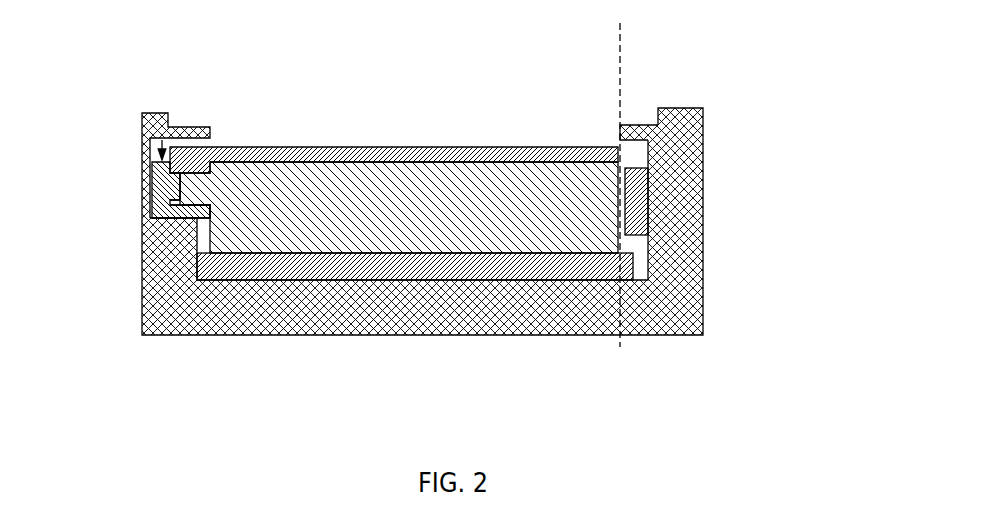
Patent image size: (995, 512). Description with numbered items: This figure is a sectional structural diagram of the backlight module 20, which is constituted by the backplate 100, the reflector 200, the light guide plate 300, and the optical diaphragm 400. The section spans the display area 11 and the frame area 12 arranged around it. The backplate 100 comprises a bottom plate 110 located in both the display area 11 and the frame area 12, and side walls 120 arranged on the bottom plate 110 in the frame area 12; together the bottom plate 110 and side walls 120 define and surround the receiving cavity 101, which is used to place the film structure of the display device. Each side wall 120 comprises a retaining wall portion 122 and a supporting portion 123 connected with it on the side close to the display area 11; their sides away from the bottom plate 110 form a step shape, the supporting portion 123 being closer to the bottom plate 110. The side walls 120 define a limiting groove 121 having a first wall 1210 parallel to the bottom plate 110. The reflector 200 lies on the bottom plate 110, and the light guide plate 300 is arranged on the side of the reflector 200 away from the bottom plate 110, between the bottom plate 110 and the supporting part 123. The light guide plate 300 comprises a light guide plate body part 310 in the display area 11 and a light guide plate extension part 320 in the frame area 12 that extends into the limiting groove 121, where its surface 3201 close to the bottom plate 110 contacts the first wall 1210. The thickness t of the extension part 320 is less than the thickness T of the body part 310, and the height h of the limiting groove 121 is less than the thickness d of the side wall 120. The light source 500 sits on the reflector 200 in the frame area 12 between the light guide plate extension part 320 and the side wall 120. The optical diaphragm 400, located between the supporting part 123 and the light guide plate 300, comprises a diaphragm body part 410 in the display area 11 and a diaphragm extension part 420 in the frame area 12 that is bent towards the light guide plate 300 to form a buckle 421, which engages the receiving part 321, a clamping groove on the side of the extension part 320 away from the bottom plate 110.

The backplate 100 is at (773, 252).
The bottom plate 110 is at (680, 312).
The side wall 120 is at (687, 260).
The limiting groove 121 is at (143, 151).
The first wall 1210 is at (150, 228).
The retaining wall portion 122 is at (705, 124).
The supporting portion 123 is at (630, 125).
The reflector 200 is at (633, 253).
The light guide plate 300 is at (283, 385).
The light guide plate body part 310 is at (295, 233).
The light guide plate extension part 320 is at (203, 220).
The receiving part 321 is at (160, 193).
The surface 3201 is at (182, 228).
The optical diaphragm 400 is at (270, 95).
The diaphragm body part 410 is at (287, 147).
The diaphragm extension part 420 is at (190, 158).
The buckle 421 is at (163, 175).
The light source 500 is at (650, 197).
The display area 11 is at (467, 121).
The frame area 12 is at (649, 50).
The backlight module 20 is at (359, 82).
The receiving cavity 101 is at (416, 99).
The height of the limiting groove h is at (150, 300).
The thickness of the side wall d is at (155, 103).
The thickness of the light guide plate extension part t is at (165, 228).
The thickness of the light guide plate body part T is at (392, 130).